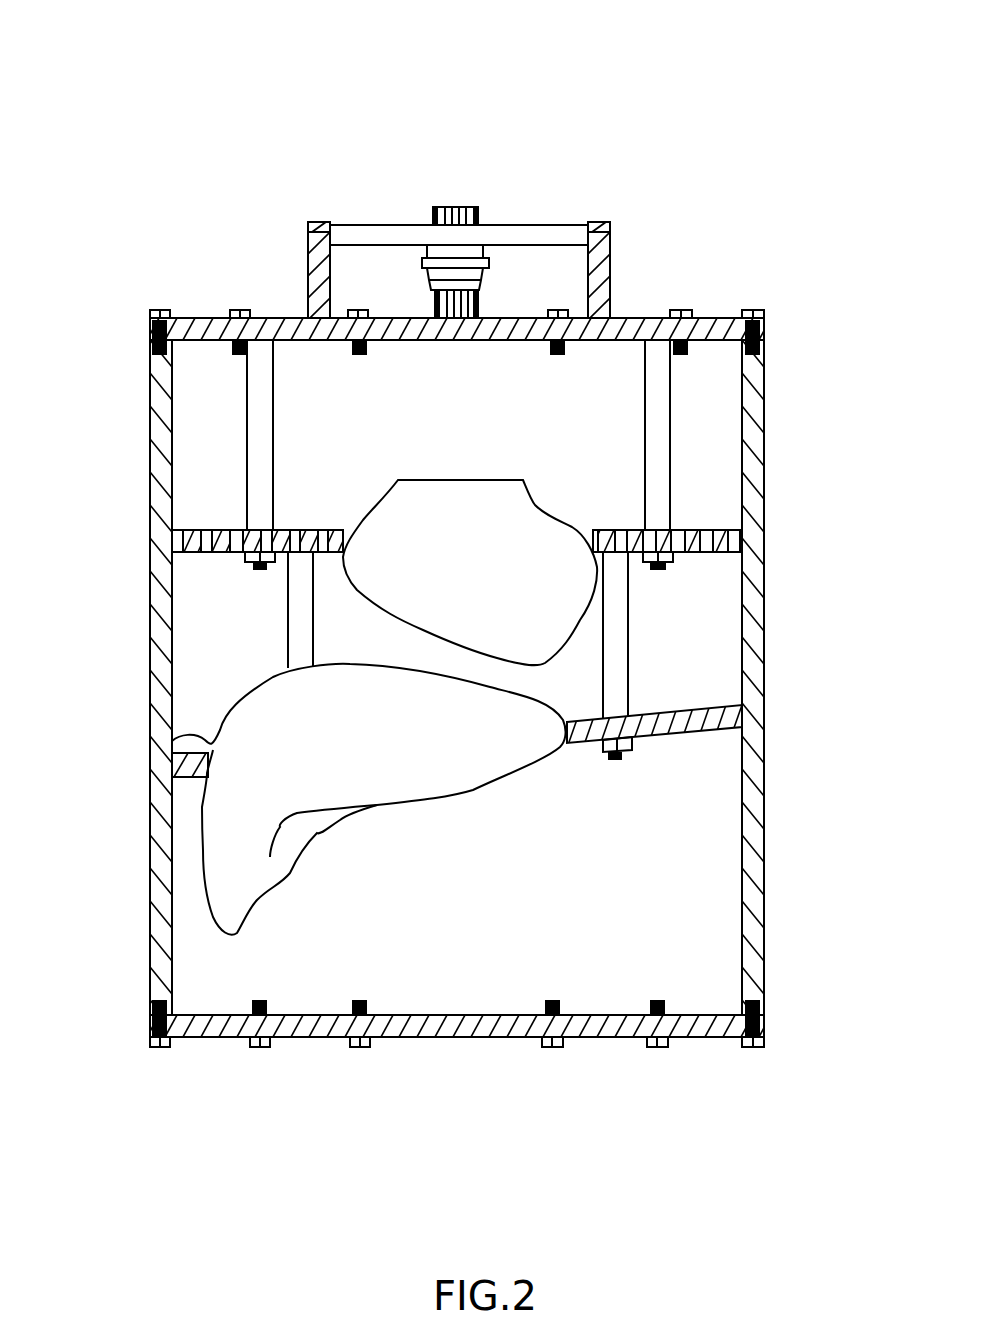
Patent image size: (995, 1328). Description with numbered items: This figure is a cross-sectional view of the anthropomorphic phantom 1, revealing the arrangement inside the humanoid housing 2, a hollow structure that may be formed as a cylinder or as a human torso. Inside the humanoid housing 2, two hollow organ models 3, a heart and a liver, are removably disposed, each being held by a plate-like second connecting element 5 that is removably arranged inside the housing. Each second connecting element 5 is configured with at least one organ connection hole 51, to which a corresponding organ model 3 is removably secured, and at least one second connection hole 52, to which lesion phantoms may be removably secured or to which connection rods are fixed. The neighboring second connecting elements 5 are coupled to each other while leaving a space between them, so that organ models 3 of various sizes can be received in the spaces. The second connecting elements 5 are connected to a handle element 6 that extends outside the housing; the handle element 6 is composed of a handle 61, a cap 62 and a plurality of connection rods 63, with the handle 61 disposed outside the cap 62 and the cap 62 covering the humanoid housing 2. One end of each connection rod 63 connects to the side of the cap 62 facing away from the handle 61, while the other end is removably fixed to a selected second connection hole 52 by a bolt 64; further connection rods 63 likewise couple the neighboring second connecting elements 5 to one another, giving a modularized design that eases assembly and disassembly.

The anthropomorphic phantom 1 is at (385, 126).
The humanoid housing 2 is at (768, 436).
The organ model 3 is at (556, 588).
The second connecting element 5 is at (716, 523).
The organ connection hole 51 is at (350, 530).
The second connection hole 52 is at (205, 535).
The handle element 6 is at (538, 216).
The handle 61 is at (352, 238).
The cap 62 is at (623, 330).
The connection rod 63 is at (258, 392).
The bolt 64 is at (247, 560).